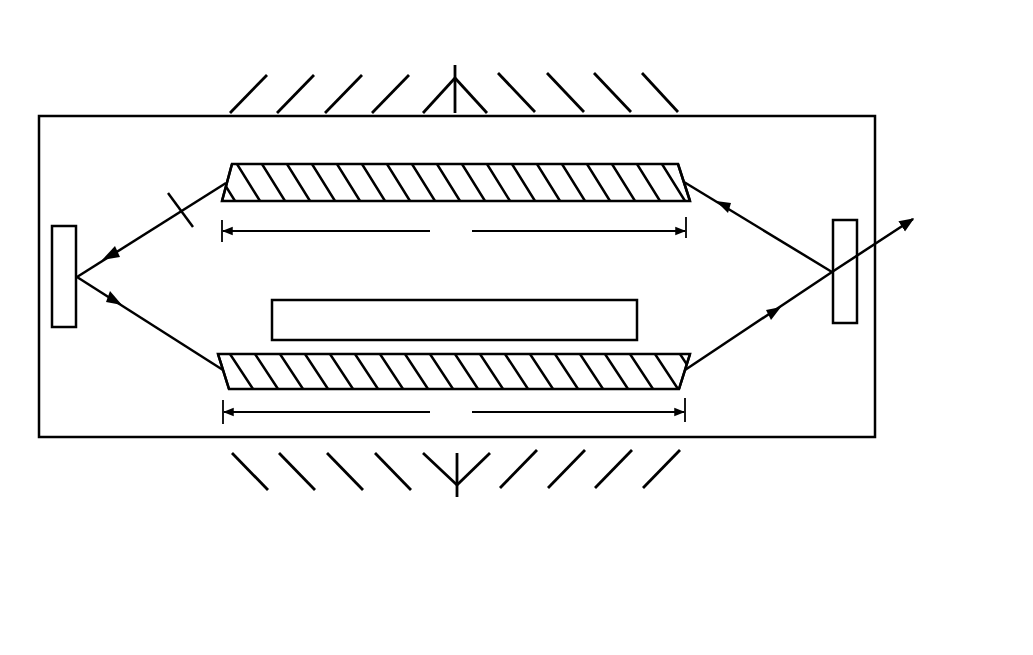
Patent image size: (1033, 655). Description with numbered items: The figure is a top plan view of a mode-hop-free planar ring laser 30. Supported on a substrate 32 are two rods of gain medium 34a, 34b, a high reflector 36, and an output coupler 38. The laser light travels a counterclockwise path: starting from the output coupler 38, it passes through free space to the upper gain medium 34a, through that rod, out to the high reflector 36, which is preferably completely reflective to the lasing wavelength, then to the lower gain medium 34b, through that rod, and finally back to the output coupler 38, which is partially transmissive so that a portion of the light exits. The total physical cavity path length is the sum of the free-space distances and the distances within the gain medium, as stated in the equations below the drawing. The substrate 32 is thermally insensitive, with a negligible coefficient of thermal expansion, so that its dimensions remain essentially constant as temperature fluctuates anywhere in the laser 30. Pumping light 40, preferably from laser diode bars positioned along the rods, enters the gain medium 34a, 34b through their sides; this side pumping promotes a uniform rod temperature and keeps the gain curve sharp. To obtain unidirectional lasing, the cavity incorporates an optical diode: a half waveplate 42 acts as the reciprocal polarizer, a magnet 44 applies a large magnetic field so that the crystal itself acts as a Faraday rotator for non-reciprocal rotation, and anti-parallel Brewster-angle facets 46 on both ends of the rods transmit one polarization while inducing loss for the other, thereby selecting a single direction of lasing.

The laser 30 is at (757, 72).
The substrate 32 is at (875, 405).
The gain medium rod 34a is at (568, 163).
The gain medium rod 34b is at (667, 348).
The high reflector 36 is at (62, 225).
The output coupler 38 is at (841, 218).
The pumping light 40 is at (660, 92).
The half waveplate 42 is at (171, 213).
The magnet 44 is at (358, 298).
The Brewster-angle facets 46 is at (212, 197).